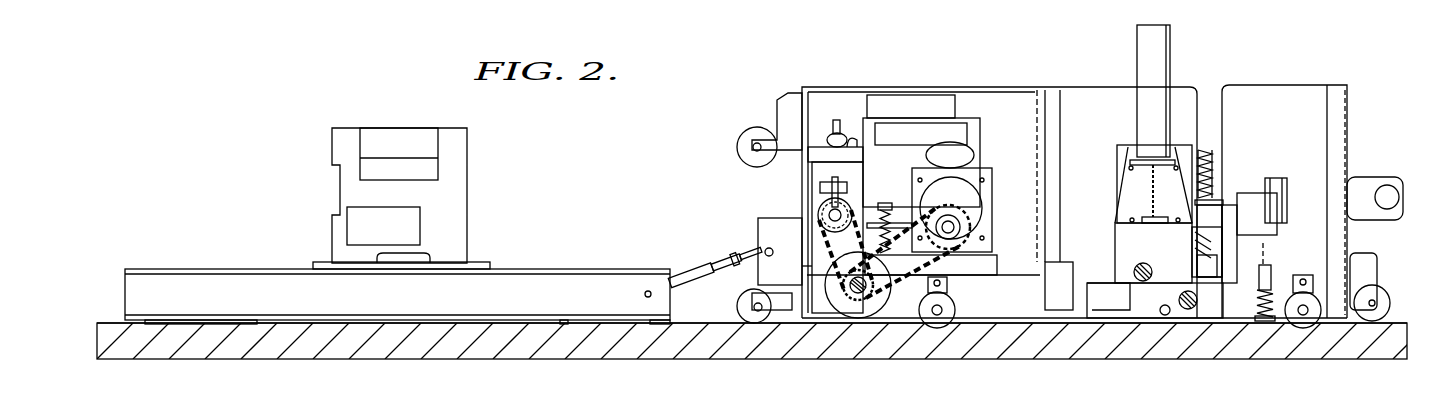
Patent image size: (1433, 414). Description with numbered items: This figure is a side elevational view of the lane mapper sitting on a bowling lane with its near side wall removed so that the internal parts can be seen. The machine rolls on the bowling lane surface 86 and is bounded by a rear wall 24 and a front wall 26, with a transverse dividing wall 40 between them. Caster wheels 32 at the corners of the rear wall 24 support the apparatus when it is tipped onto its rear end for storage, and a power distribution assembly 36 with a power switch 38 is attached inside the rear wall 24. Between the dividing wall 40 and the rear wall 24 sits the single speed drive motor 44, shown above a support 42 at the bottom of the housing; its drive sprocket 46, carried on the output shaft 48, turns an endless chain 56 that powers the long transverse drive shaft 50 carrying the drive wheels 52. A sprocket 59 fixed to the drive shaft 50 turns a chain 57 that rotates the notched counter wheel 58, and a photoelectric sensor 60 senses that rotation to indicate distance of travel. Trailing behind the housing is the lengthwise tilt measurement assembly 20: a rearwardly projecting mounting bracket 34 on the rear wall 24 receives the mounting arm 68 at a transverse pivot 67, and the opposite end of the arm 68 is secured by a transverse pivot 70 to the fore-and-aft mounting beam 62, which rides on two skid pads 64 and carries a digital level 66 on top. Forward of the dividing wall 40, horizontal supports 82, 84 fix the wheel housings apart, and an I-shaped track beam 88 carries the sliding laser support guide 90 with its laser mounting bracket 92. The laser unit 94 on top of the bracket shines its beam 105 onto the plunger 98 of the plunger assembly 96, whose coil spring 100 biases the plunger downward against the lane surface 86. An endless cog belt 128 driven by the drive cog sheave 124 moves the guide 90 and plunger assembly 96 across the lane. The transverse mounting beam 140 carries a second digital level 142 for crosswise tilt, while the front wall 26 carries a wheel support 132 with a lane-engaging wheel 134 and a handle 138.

The lengthwise tilt measurement assembly 20 is at (441, 175).
The rear wall 24 is at (754, 109).
The front wall 26 is at (1347, 107).
The caster wheels 32 is at (775, 122).
The mounting bracket 34 is at (760, 230).
The power distribution assembly 36 is at (818, 153).
The power switch 38 is at (847, 137).
The transverse dividing wall 40 is at (1040, 120).
The shelf 42 is at (1008, 270).
The drive motor 44 is at (972, 195).
The drive sprocket 46 is at (963, 233).
The output shaft 48 is at (967, 205).
The drive shaft 50 is at (870, 293).
The drive wheels 52 is at (853, 317).
The endless chain 56 is at (940, 267).
The chain 57 is at (812, 266).
The notched counter wheel 58 is at (828, 213).
The sprocket 59 is at (845, 308).
The photoelectric sensor 60 is at (818, 185).
The fore-and-aft mounting beam 62 is at (232, 270).
The skid pads 64 is at (235, 323).
The digital level 66 is at (452, 133).
The transverse pivot 67 is at (764, 252).
The mounting arm 68 is at (688, 278).
The transverse pivot 70 is at (645, 294).
The horizontal support 82 is at (1188, 310).
The horizontal support 84 is at (1135, 268).
The bowling lane surface 86 is at (1122, 347).
The track beam 88 is at (1195, 243).
The laser support guide 90 is at (1205, 260).
The laser mounting bracket 92 is at (1242, 272).
The laser unit 94 is at (1255, 197).
The plunger assembly 96 is at (1277, 273).
The plunger 98 is at (1268, 325).
The coil spring 100 is at (1252, 303).
The beam 105 is at (1263, 243).
The drive cog sheave 124 is at (1212, 160).
The cog belt 128 is at (1205, 150).
The wheel support 132 is at (1362, 260).
The lane-engaging wheel 134 is at (1383, 300).
The handle 138 is at (1390, 190).
The transverse mounting beam 140 is at (1152, 187).
The digital level 142 is at (1147, 40).